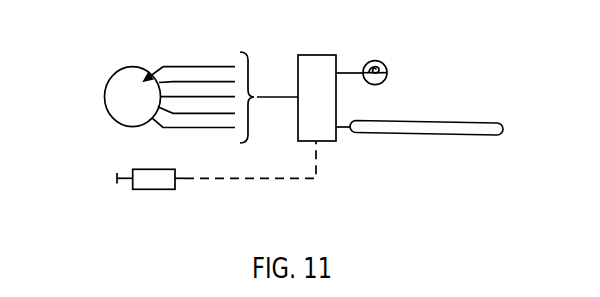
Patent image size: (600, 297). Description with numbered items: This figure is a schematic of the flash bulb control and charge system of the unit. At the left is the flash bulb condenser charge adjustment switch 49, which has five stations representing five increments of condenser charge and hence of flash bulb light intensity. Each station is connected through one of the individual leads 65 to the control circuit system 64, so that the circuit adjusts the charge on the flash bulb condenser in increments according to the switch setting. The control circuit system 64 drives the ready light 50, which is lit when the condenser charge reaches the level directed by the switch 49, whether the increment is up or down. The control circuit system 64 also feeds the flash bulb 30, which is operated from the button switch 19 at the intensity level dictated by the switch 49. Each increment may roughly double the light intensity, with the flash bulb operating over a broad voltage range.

The button switch 19 is at (120, 180).
The flash bulb 30 is at (425, 120).
The flash bulb condenser charge adjustment switch 49 is at (105, 99).
The ready light 50 is at (382, 61).
The control circuit system 64 is at (317, 55).
The individual leads 65 is at (180, 66).